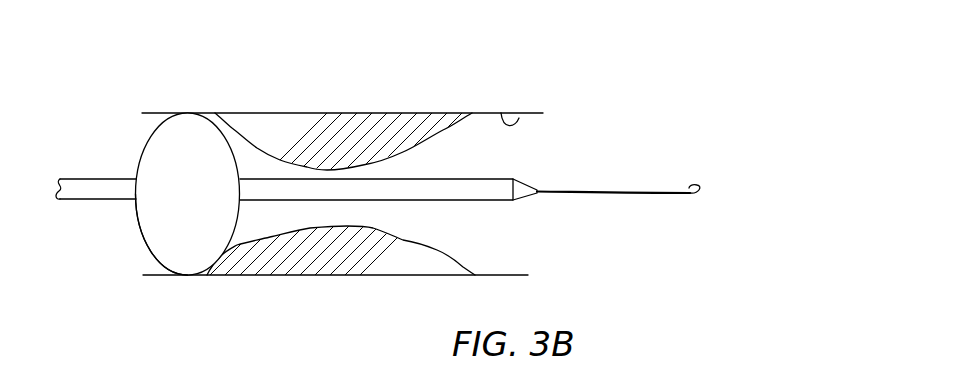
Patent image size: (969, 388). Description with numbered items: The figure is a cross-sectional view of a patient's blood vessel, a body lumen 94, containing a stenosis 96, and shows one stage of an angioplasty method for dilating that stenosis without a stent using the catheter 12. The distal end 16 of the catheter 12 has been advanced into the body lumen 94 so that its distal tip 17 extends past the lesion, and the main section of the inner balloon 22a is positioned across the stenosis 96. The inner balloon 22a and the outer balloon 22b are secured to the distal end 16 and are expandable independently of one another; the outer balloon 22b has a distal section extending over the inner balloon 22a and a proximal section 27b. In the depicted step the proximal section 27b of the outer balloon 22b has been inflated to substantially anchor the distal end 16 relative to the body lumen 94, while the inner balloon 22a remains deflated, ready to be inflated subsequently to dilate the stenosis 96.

The catheter 12 is at (375, 220).
The distal end 16 is at (81, 179).
The distal tip 17 is at (528, 185).
The inner balloon 22a is at (500, 202).
The outer balloon 22b is at (162, 265).
The proximal section 27b is at (193, 262).
The body lumen 94 is at (519, 118).
The stenosis 96 is at (377, 127).